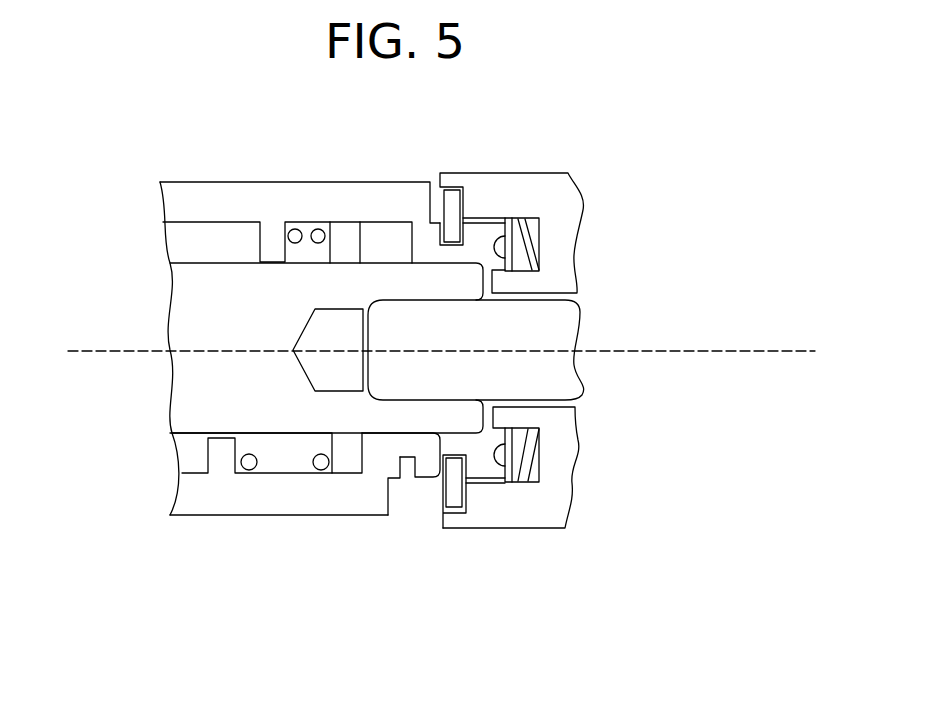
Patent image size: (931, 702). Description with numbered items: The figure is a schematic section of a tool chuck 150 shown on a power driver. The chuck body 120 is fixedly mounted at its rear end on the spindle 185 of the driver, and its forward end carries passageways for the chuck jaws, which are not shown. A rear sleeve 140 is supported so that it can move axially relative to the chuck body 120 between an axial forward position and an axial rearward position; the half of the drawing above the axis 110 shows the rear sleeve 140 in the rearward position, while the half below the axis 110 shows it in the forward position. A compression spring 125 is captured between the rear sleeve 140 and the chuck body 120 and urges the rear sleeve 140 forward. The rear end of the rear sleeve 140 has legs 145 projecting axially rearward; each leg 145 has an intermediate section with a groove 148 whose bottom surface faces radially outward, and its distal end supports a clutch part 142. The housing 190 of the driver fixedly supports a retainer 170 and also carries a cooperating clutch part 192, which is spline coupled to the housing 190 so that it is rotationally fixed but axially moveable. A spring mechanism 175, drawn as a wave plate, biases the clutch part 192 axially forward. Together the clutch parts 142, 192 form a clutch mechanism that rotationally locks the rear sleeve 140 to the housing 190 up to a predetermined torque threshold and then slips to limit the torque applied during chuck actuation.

The axis 110 is at (770, 350).
The chuck body 120 is at (197, 263).
The compression spring 125 is at (298, 228).
The rear sleeve 140 is at (213, 182).
The clutch part 142 is at (477, 452).
The legs 145 is at (415, 468).
The groove 148 is at (408, 468).
The tool chuck 150 is at (140, 596).
The retainer 170 is at (447, 490).
The spring mechanism 175 is at (529, 480).
The spindle 185 is at (578, 320).
The housing 190 is at (585, 202).
The clutch part 192 is at (500, 443).